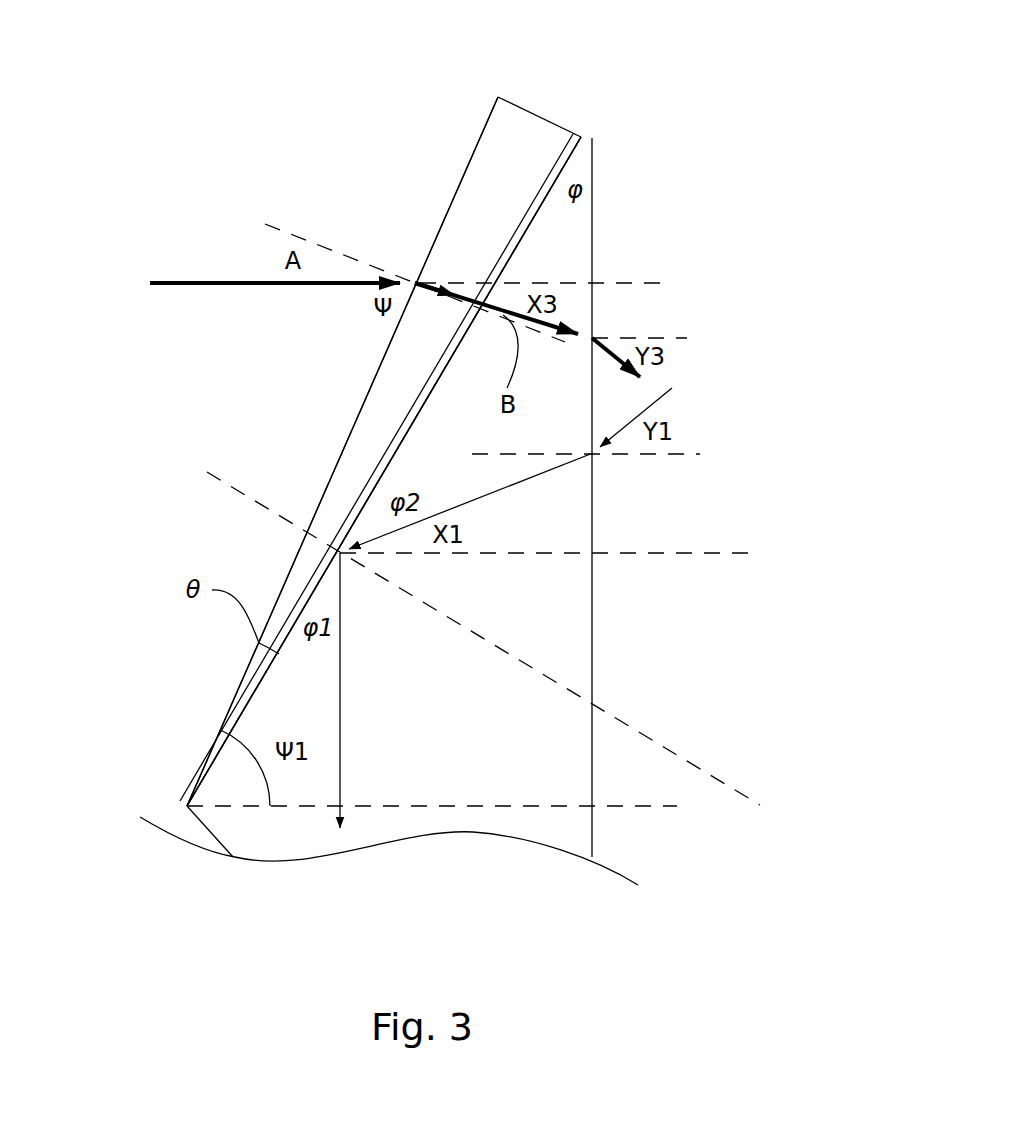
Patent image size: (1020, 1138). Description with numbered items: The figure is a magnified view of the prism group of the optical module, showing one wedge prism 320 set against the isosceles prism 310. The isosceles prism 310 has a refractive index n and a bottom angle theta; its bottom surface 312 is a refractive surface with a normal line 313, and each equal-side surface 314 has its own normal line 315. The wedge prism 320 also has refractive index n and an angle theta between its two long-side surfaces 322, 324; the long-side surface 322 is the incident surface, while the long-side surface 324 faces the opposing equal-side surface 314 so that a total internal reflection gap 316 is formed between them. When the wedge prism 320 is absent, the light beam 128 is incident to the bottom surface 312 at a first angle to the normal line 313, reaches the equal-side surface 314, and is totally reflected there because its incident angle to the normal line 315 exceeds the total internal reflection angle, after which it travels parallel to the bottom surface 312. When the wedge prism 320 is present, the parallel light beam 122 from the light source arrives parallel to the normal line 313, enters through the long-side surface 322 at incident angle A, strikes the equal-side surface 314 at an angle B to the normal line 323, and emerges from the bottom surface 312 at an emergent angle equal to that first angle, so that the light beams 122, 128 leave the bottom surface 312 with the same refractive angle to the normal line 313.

The light beam 122 is at (168, 280).
The light beam 128 is at (668, 398).
The isosceles prism 310 is at (455, 830).
The bottom surface 312 is at (599, 311).
The normal line 313 is at (636, 282).
The equal-side surface 314 is at (543, 232).
The normal line 315 is at (238, 488).
The total internal reflection gap 316 is at (567, 163).
The wedge prism 320 is at (481, 157).
The long-side surface 322 is at (490, 115).
The normal line 323 is at (300, 235).
The long-side surface 324 is at (538, 202).